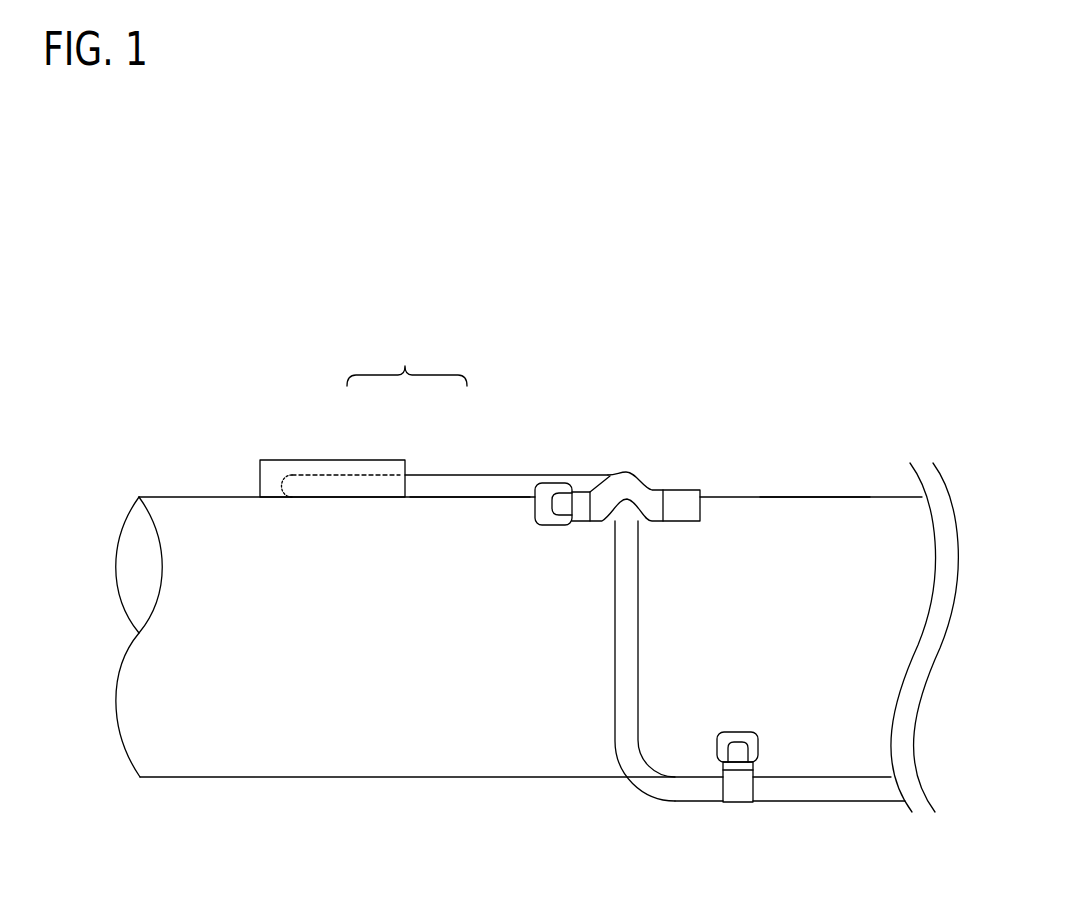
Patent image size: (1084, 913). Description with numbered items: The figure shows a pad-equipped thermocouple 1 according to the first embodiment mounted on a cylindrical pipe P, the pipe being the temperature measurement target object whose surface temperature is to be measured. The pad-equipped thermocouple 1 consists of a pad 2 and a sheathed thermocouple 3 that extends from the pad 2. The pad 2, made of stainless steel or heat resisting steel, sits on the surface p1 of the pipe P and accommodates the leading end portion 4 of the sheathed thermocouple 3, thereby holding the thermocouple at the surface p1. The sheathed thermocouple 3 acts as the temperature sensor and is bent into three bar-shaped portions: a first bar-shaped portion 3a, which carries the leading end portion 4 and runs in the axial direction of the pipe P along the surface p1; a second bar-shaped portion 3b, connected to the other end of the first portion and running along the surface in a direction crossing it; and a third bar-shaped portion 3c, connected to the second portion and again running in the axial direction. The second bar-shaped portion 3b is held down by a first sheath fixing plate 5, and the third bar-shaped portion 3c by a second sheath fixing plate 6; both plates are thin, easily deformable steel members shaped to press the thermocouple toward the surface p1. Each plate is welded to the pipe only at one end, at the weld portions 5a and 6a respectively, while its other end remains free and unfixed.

The pad-equipped thermocouple 1 is at (407, 361).
The pad 2 is at (346, 459).
The sheathed thermocouple 3 is at (469, 473).
The first bar-shaped portion 3a is at (450, 488).
The second bar-shaped portion 3b is at (620, 643).
The third bar-shaped portion 3c is at (818, 788).
The leading end portion 4 is at (313, 500).
The first sheath fixing plate 5 is at (641, 491).
The weld portion 5a is at (546, 497).
The second sheath fixing plate 6 is at (740, 790).
The weld portion 6a is at (748, 738).
The pipe P is at (177, 496).
The surface p1 is at (788, 518).